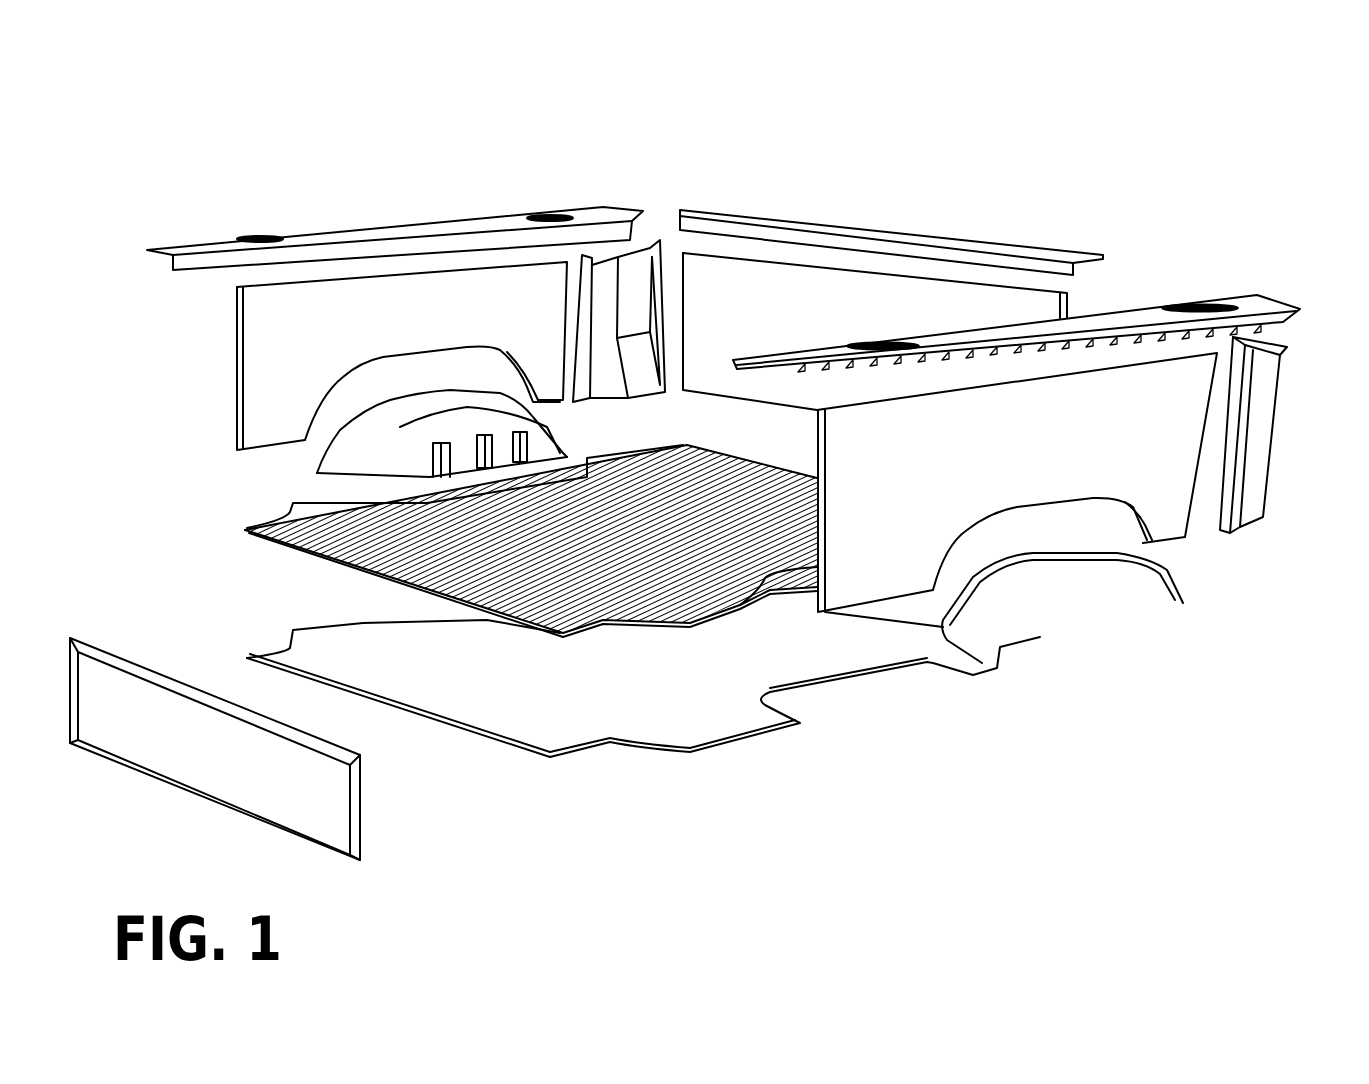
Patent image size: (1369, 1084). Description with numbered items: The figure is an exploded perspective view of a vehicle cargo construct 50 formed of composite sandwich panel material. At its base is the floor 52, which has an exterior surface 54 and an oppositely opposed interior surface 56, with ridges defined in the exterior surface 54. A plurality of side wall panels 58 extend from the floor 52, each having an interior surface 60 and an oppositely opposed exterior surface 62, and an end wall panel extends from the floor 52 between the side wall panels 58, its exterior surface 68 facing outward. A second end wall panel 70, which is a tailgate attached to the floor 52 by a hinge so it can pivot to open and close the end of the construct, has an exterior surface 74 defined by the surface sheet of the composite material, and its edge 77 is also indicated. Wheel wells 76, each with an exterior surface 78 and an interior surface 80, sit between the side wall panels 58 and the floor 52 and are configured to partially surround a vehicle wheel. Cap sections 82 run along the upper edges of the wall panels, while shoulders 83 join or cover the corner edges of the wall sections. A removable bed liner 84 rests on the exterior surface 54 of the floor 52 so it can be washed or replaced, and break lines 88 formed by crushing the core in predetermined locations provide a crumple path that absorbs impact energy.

The vehicle cargo construct 50 is at (872, 145).
The floor 52 is at (643, 643).
The exterior surface 54 is at (558, 738).
The interior surface 56 is at (747, 742).
The side wall panels 58 is at (747, 445).
The interior surface 60 is at (1173, 460).
The exterior surface 62 is at (257, 322).
The exterior surface 68 is at (707, 277).
The second end wall panel 70 is at (249, 716).
The exterior surface 74 is at (363, 790).
The wheel wells 76 is at (740, 487).
The tailgate panel side edge 77 is at (85, 688).
The exterior surface 78 is at (423, 423).
The interior surface 80 is at (1110, 573).
The cap sections 82 is at (493, 220).
The shoulders 83 is at (637, 267).
The bed liner 84 is at (512, 541).
The break lines 88 is at (385, 552).